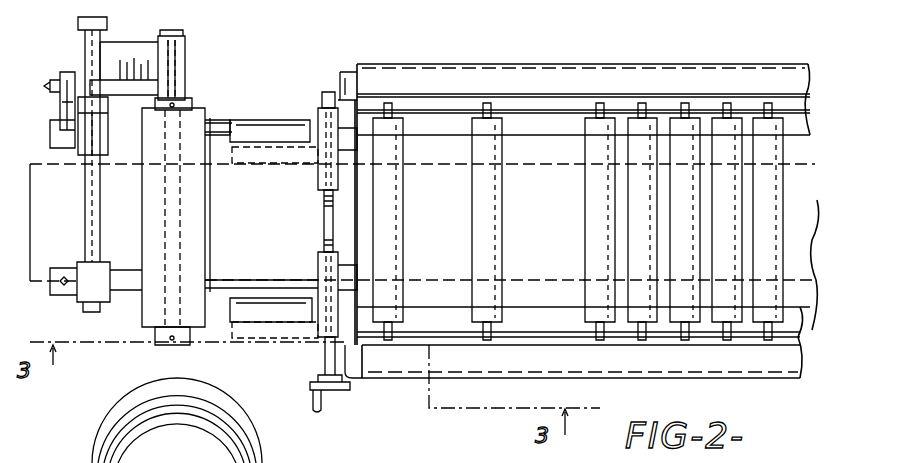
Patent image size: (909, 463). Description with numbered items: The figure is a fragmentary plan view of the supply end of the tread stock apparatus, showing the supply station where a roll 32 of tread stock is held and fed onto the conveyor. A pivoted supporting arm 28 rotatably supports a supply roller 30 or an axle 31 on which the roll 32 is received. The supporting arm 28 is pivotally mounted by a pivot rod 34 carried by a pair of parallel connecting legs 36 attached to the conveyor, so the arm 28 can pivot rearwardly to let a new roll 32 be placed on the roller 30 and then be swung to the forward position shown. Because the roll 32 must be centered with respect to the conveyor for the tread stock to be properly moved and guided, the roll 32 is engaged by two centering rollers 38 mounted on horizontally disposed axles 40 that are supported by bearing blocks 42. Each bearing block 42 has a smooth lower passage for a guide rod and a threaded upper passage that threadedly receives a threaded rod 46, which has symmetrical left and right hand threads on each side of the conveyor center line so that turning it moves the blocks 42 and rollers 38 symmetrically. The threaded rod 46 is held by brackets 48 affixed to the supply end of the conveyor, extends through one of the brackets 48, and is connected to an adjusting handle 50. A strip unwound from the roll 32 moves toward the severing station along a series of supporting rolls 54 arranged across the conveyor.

The pivoted supporting arm 28 is at (128, 42).
The supply roller 30 is at (140, 318).
The axle 31 is at (165, 346).
The roll of tread stock 32 is at (32, 278).
The pivot rod 34 is at (85, 203).
The connecting legs 36 is at (218, 125).
The centering rollers 38 is at (264, 108).
The axles 40 is at (318, 157).
The bearing blocks 42 is at (318, 114).
The threaded rod 46 is at (324, 210).
The brackets 48 is at (345, 100).
The adjusting handle 50 is at (342, 396).
The supporting rolls 54 is at (472, 207).